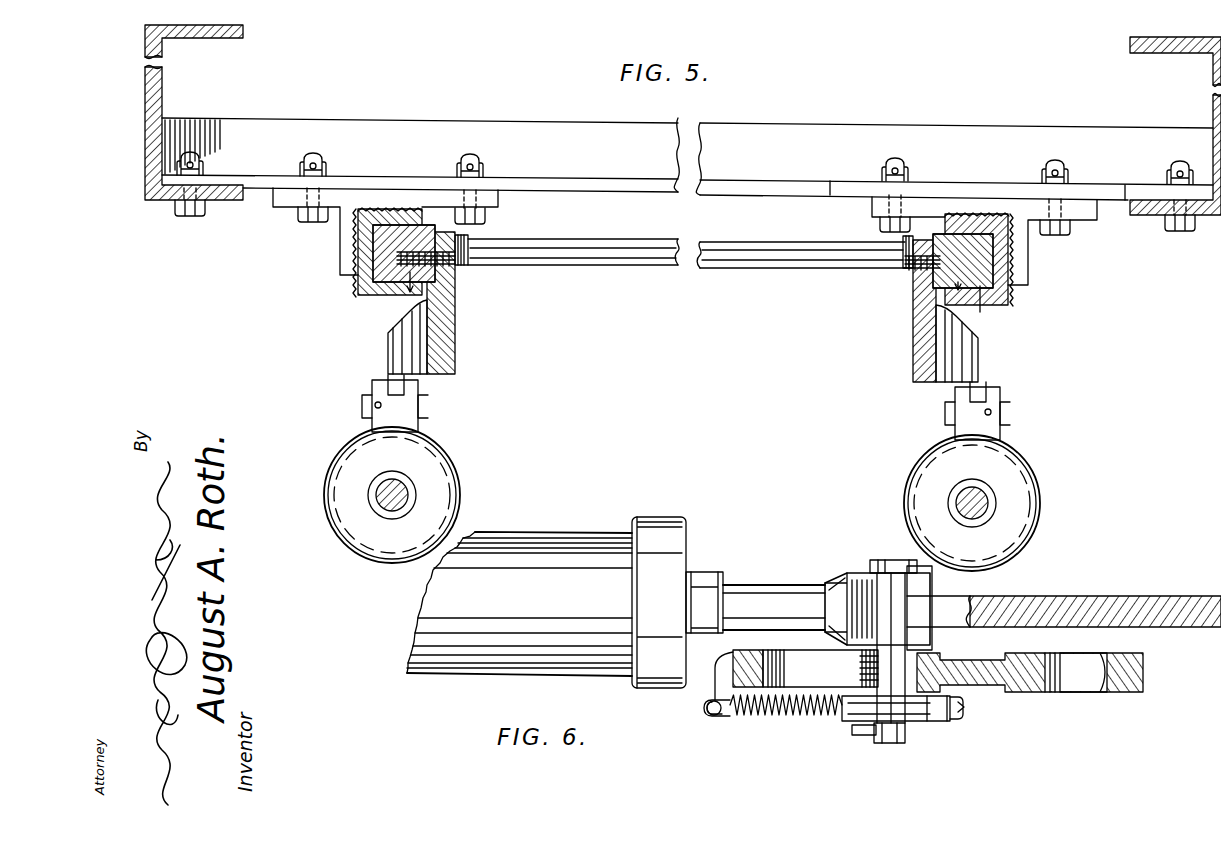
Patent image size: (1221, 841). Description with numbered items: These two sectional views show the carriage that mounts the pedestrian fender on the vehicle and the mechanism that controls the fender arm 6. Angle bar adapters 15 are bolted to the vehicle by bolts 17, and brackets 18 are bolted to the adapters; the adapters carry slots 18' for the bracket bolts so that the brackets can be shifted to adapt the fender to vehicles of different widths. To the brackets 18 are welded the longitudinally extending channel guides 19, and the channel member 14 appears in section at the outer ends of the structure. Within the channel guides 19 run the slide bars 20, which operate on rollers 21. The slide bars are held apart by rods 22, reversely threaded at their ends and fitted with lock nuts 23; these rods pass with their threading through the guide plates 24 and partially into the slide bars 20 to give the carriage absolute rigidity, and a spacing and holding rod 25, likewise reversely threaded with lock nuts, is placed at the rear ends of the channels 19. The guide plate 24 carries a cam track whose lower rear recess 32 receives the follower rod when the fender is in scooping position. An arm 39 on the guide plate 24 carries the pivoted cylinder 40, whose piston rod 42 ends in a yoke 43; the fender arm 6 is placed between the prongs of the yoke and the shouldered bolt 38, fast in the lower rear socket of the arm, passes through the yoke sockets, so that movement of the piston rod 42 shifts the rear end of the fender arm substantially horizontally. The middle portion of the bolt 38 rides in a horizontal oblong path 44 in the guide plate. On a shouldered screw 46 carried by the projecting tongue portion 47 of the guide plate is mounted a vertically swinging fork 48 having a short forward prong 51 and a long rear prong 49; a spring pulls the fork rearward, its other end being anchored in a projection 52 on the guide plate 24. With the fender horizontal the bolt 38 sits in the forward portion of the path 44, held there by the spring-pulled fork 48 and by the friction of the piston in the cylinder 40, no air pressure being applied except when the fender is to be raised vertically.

In FIG. 5, the channel member 14 is at (160, 80).
In FIG. 5, the angle bar adapter 15 is at (980, 126).
In FIG. 5, the bolt 17 is at (176, 213).
In FIG. 5, the bracket 18 is at (719, 219).
In FIG. 5, the slot 18' is at (232, 166).
In FIG. 5, the channel guide 19 is at (362, 294).
In FIG. 5, the slide bar 20 is at (988, 258).
In FIG. 5, the roller 21 is at (980, 300).
In FIG. 5, the rod 22 is at (830, 272).
In FIG. 5, the lock nut 23 is at (905, 280).
In FIG. 5, the guide plate 24 is at (450, 335).
In FIG. 6, the guide plate 24 is at (742, 652).
In FIG. 5, the spacing and holding rod 25 is at (545, 242).
In FIG. 5, the arm 39 is at (410, 363).
In FIG. 5, the cylinder 40 is at (437, 461).
In FIG. 6, the cylinder 40 is at (573, 537).
In FIG. 5, the piston rod 42 is at (408, 494).
In FIG. 6, the piston rod 42 is at (762, 588).
In FIG. 6, the yoke 43 is at (853, 572).
In FIG. 6, the shouldered bolt 38 is at (880, 559).
In FIG. 6, the fender arm 6 is at (1058, 596).
In FIG. 6, the horizontal oblong path 44 is at (824, 676).
In FIG. 6, the shouldered screw 46 is at (864, 734).
In FIG. 6, the tongue portion 47 is at (807, 689).
In FIG. 6, the fork 48 is at (850, 708).
In FIG. 6, the long rear prong 49 is at (918, 742).
In FIG. 6, the short forward prong 51 is at (767, 713).
In FIG. 6, the projection 52 is at (705, 706).
In FIG. 6, the lower rear recess 32 is at (1090, 692).